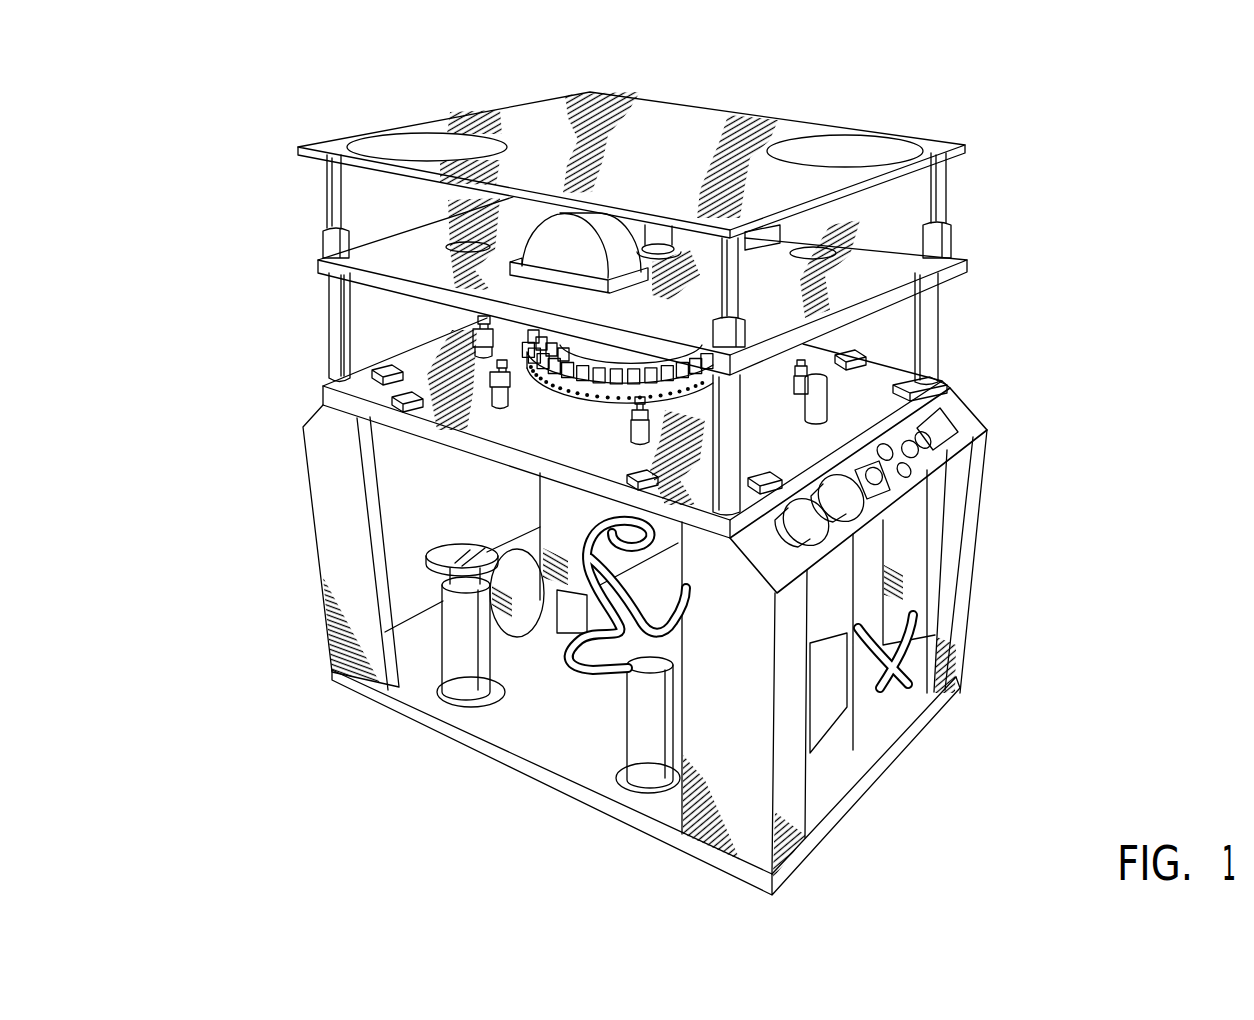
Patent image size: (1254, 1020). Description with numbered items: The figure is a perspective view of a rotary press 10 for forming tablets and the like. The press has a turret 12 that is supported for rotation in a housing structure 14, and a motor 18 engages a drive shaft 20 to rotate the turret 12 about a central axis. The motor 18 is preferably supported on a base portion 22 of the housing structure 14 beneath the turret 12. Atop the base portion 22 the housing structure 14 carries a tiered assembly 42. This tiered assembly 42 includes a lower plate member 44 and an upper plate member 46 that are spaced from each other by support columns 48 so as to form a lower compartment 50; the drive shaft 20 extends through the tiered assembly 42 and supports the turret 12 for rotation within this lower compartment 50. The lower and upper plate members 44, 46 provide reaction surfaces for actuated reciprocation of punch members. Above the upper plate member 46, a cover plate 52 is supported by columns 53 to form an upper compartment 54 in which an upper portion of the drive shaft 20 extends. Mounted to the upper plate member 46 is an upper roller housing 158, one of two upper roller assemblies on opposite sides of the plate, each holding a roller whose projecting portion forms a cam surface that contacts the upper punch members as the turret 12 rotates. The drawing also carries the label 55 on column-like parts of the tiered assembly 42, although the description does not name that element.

The rotary press 10 is at (997, 410).
The turret 12 is at (553, 397).
The housing structure 14 is at (318, 446).
The motor 18 is at (557, 504).
The drive shaft 20 is at (652, 232).
The base portion 22 is at (517, 737).
The tiered assembly 42 is at (312, 143).
The lower plate member 44 is at (423, 367).
The upper plate member 46 is at (414, 247).
The support columns 48 is at (338, 328).
The lower compartment 50 is at (943, 360).
The cover plate 52 is at (678, 118).
The columns 53 is at (946, 180).
The upper compartment 54 is at (932, 297).
The upper rod 55 is at (333, 192).
The upper roller housing 158 is at (797, 228).